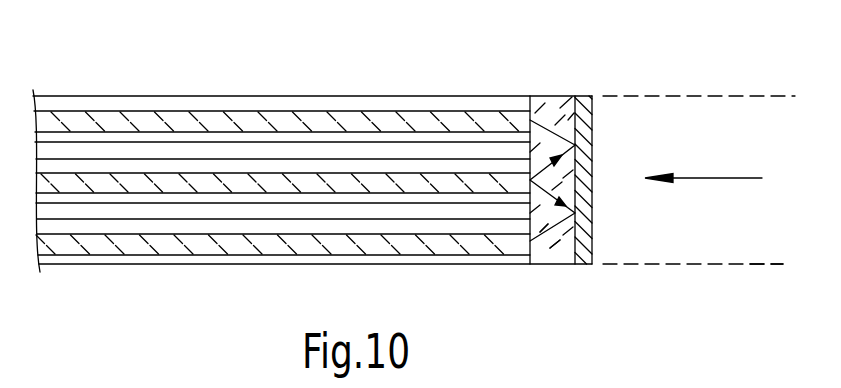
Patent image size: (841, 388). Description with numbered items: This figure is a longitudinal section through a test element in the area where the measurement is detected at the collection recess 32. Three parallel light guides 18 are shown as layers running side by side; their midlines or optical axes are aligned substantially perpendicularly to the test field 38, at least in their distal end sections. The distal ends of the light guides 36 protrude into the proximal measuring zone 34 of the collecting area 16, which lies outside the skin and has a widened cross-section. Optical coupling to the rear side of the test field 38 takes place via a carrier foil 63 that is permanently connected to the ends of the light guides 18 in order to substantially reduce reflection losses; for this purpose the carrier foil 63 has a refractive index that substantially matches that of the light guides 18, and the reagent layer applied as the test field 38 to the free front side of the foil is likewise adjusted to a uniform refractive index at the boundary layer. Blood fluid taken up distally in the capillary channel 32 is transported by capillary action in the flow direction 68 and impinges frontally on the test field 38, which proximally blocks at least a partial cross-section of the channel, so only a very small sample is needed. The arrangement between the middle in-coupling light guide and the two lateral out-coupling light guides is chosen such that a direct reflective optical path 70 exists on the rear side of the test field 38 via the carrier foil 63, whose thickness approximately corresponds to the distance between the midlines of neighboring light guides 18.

The collecting area 16 is at (660, 230).
The light guide 18 is at (112, 122).
The collection recess 32 is at (737, 264).
The measuring zone 34 is at (613, 123).
The distal ends of the light guides 36 is at (513, 122).
The test field 38 is at (588, 253).
The carrier foil 63 is at (552, 247).
The flow direction 68 is at (715, 177).
The direct reflective optical path 70 is at (548, 162).